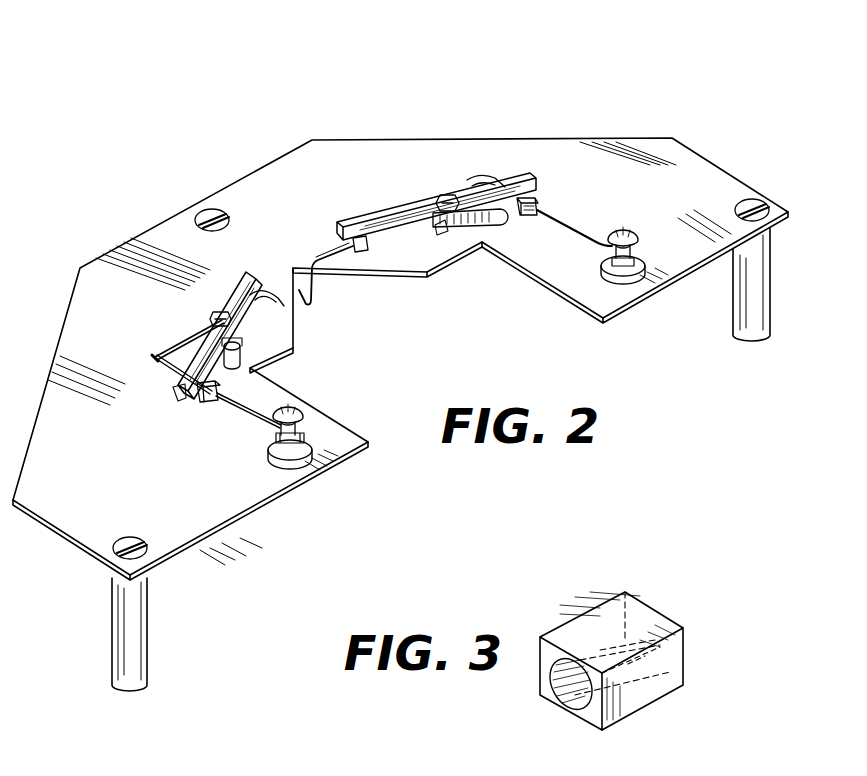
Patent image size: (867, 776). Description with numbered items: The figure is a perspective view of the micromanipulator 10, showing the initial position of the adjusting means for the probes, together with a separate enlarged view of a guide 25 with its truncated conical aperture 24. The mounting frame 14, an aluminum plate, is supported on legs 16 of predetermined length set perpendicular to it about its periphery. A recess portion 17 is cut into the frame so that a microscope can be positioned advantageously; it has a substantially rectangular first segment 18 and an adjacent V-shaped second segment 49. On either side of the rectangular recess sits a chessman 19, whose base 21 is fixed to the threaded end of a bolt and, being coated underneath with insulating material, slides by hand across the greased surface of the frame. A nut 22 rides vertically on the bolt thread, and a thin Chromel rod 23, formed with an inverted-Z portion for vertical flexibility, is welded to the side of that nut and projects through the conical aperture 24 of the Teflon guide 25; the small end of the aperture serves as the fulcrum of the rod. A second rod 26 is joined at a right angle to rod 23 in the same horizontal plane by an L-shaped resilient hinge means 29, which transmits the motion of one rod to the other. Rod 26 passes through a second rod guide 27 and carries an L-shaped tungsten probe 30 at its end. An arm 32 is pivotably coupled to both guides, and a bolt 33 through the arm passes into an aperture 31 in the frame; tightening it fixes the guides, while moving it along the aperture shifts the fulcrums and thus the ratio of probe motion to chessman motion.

In FIG. 2, the tool holder assembly 10 is at (348, 78).
In FIG. 2, the mounting frame 14 is at (279, 210).
In FIG. 2, the legs 16 is at (122, 683).
In FIG. 2, the recess portion 17 is at (562, 303).
In FIG. 2, the first segment 18 is at (288, 382).
In FIG. 2, the chessman 19 is at (301, 414).
In FIG. 2, the base 21 is at (279, 451).
In FIG. 2, the nut 22 is at (303, 439).
In FIG. 2, the rod 23 is at (264, 428).
In FIG. 2, the truncated conical aperture 24 is at (538, 209).
In FIG. 3, the truncated conical aperture 24 is at (576, 703).
In FIG. 2, the guide 25 is at (200, 395).
In FIG. 3, the guide 25 is at (625, 603).
In FIG. 2, the second rod 26 is at (340, 246).
In FIG. 2, the second rod guide 27 is at (262, 291).
In FIG. 2, the hinge means 29 is at (153, 360).
In FIG. 2, the L-shaped probe 30 is at (313, 301).
In FIG. 2, the aperture 31 is at (490, 223).
In FIG. 2, the arm 32 is at (437, 211).
In FIG. 2, the bolt 33 is at (211, 319).
In FIG. 2, the second segment 49 is at (299, 323).